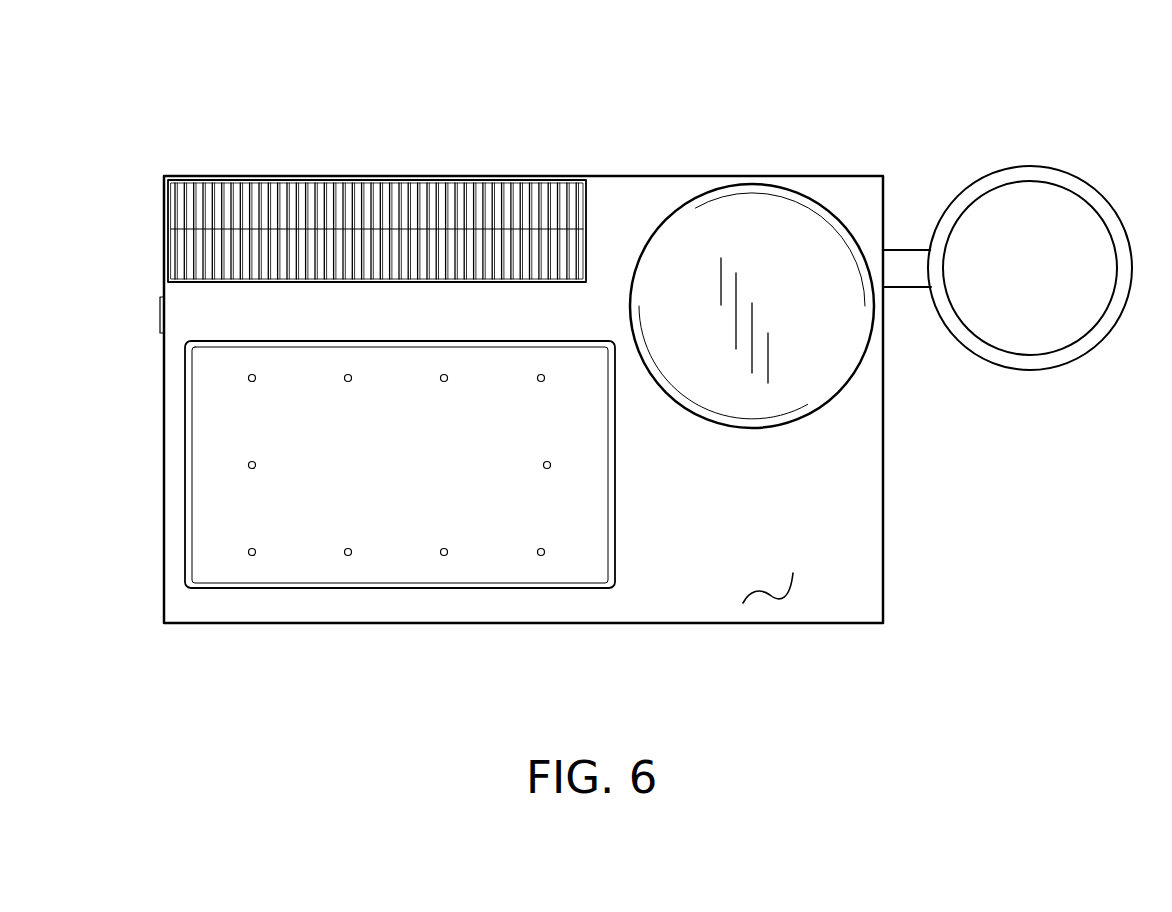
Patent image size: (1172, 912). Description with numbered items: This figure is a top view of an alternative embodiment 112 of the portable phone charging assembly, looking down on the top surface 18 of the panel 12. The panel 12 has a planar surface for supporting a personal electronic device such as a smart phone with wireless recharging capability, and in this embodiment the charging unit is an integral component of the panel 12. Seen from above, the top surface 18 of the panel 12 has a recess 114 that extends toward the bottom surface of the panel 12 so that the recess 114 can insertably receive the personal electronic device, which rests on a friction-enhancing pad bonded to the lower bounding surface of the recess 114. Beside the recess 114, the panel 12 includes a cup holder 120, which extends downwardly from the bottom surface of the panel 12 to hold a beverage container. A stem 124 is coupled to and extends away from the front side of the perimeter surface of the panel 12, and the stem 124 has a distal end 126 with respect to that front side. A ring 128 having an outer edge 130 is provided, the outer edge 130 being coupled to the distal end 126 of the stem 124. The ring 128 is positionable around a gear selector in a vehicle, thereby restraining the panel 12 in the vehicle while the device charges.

The panel 12 is at (883, 623).
The top surface 18 is at (770, 596).
The alternative embodiment 112 is at (845, 163).
The recess 114 is at (432, 588).
The cup holder 120 is at (680, 205).
The stem 124 is at (905, 288).
The distal end 126 is at (945, 248).
The ring 128 is at (1097, 184).
The outer edge 130 is at (1060, 368).